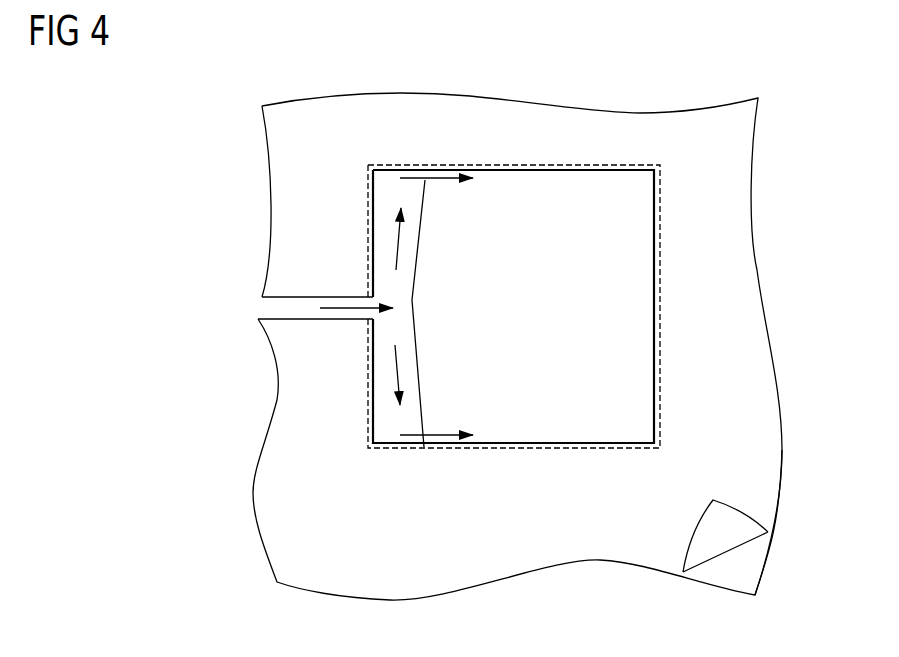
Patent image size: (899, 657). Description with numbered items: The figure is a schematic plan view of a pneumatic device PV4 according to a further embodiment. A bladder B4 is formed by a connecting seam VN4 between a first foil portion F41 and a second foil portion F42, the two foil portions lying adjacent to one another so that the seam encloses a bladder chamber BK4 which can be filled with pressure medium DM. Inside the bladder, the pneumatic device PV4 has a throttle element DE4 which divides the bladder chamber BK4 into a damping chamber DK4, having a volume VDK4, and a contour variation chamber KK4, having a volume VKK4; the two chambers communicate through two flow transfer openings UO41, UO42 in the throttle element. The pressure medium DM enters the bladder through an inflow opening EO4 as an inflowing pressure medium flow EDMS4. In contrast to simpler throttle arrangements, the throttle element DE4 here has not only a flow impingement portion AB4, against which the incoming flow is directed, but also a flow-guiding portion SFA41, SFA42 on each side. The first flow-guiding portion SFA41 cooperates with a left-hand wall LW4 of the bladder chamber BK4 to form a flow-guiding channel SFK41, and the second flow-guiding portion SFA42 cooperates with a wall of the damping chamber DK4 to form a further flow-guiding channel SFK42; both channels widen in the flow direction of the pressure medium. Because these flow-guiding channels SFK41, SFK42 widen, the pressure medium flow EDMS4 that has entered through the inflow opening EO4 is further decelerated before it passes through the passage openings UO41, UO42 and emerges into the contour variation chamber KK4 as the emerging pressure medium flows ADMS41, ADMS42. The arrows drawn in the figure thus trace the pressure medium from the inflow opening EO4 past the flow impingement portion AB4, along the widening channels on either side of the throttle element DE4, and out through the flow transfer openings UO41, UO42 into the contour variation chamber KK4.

The pneumatic device PV4 is at (238, 93).
The bladder B4 is at (670, 254).
The bladder chamber BK4 is at (600, 288).
The connecting seam VN4 is at (660, 198).
The volume of the contour variation chamber VKK4 is at (633, 395).
The left-hand wall LW4 is at (371, 242).
The pressure medium DM is at (263, 305).
The inflowing pressure medium flow EDMS4 is at (332, 308).
The inflow opening EO4 is at (368, 300).
The flow-guiding portion SFA41 is at (418, 204).
The flow-guiding channel SFK41 is at (375, 223).
The flow impingement portion AB4 is at (407, 313).
The volume of the damping chamber VDK4 is at (383, 360).
The flow-guiding channel SFK42 is at (374, 392).
The flow-guiding portion SFA42 is at (418, 412).
The emerging pressure medium flow ADMS41 is at (437, 178).
The flow transfer opening UO41 is at (423, 183).
The throttle element DE4 is at (420, 234).
The emerging pressure medium flow ADMS42 is at (438, 435).
The flow transfer opening UO42 is at (427, 428).
The damping chamber DK4 is at (390, 450).
The contour variation chamber KK4 is at (637, 450).
The second foil portion F42 is at (725, 523).
The first foil portion F41 is at (750, 563).